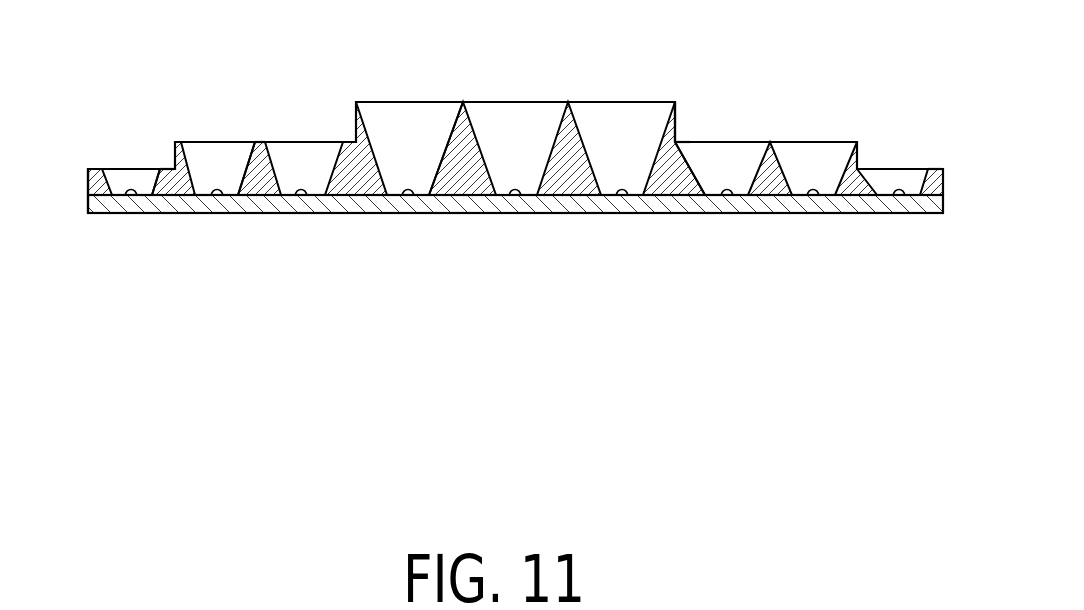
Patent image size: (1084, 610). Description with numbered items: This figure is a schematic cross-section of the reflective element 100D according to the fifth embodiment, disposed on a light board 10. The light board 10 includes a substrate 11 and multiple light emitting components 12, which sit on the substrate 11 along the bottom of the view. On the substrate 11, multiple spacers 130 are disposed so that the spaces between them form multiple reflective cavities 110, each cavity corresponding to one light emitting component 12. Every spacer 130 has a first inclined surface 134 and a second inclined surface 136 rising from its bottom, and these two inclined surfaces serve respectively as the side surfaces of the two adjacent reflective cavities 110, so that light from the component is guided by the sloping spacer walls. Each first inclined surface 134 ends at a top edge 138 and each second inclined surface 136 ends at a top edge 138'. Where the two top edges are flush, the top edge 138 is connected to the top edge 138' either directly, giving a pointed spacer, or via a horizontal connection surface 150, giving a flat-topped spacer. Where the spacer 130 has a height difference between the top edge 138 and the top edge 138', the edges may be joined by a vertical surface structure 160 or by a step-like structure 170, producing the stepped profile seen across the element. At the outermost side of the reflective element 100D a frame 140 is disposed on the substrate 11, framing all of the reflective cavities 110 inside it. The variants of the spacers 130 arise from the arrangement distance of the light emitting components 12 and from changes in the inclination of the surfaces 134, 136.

The reflective element 100D is at (88, 183).
The reflective cavity 110 is at (622, 116).
The spacer 130 is at (152, 186).
The first inclined surface 134 is at (188, 182).
The second inclined surface 136 is at (134, 200).
The top edge of the first inclined surface 138 is at (428, 71).
The top edge of the second inclined surface 138' is at (422, 106).
The frame 140 is at (937, 168).
The horizontal connection surface 150 is at (259, 141).
The vertical surface structure 160 is at (680, 141).
The step-like structure 170 is at (165, 168).
The light board 10 is at (948, 277).
The substrate 11 is at (920, 204).
The light emitting component 12 is at (899, 199).